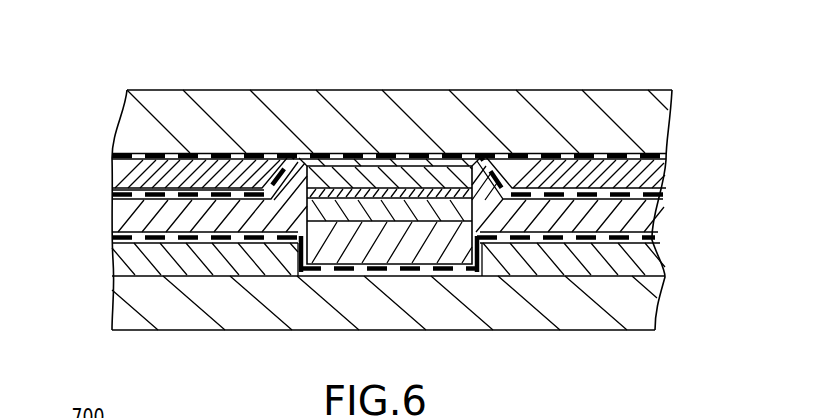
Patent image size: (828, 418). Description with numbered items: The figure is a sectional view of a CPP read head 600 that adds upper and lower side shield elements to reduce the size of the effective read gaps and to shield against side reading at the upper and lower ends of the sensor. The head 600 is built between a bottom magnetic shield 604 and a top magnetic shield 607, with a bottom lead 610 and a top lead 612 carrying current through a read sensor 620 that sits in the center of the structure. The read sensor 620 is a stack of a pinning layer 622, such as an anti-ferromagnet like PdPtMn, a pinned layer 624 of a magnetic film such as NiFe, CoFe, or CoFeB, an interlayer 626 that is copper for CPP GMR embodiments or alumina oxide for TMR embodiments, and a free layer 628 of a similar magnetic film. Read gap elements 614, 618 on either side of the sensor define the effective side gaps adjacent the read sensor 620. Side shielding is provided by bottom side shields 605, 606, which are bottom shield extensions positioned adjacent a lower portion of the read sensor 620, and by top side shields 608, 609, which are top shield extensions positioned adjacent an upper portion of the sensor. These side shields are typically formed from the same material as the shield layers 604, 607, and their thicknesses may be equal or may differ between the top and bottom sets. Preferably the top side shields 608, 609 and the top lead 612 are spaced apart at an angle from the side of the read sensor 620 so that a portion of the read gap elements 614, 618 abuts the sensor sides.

The CPP read head 600 is at (104, 73).
The bottom magnetic shield 604 is at (648, 303).
The bottom side shield 605 is at (652, 263).
The bottom side shield 606 is at (125, 257).
The top magnetic shield 607 is at (660, 115).
The top side shield 608 is at (120, 171).
The top side shield 609 is at (665, 173).
The bottom lead 610 is at (646, 237).
The top lead 612 is at (668, 162).
The read gap element 614 is at (578, 210).
The read gap element 618 is at (120, 200).
The read sensor 620 is at (125, 296).
The pinning layer 622 is at (343, 256).
The pinned layer 624 is at (367, 214).
The interlayer 626 is at (432, 193).
The free layer 628 is at (452, 176).